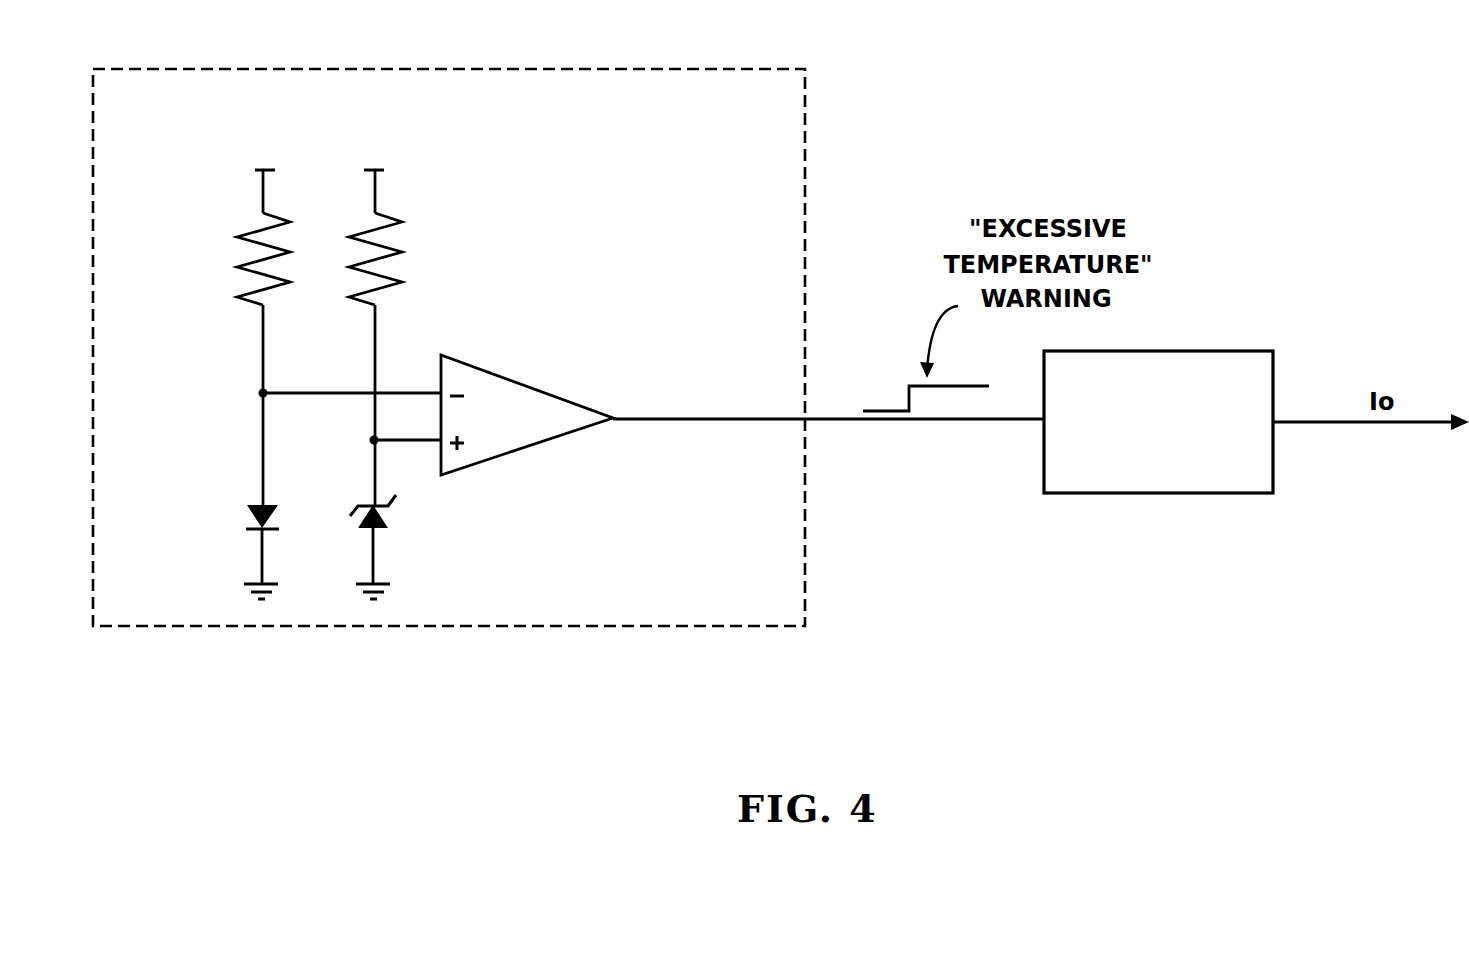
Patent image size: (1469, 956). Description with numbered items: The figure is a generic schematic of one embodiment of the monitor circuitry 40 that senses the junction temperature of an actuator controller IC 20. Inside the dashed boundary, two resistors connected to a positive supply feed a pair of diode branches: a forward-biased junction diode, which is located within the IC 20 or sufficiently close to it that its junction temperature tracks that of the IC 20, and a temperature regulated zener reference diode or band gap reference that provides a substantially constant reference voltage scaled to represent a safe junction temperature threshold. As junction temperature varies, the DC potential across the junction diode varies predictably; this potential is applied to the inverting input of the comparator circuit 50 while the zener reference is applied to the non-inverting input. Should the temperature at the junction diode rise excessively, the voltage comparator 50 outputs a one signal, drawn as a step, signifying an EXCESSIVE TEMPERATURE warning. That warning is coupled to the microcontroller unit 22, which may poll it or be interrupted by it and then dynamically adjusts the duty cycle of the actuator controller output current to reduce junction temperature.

The actuator controller IC 20 is at (857, 175).
The monitor circuitry 40 is at (553, 268).
The comparator circuit 50 is at (510, 457).
The microcontroller unit 22 is at (1033, 443).